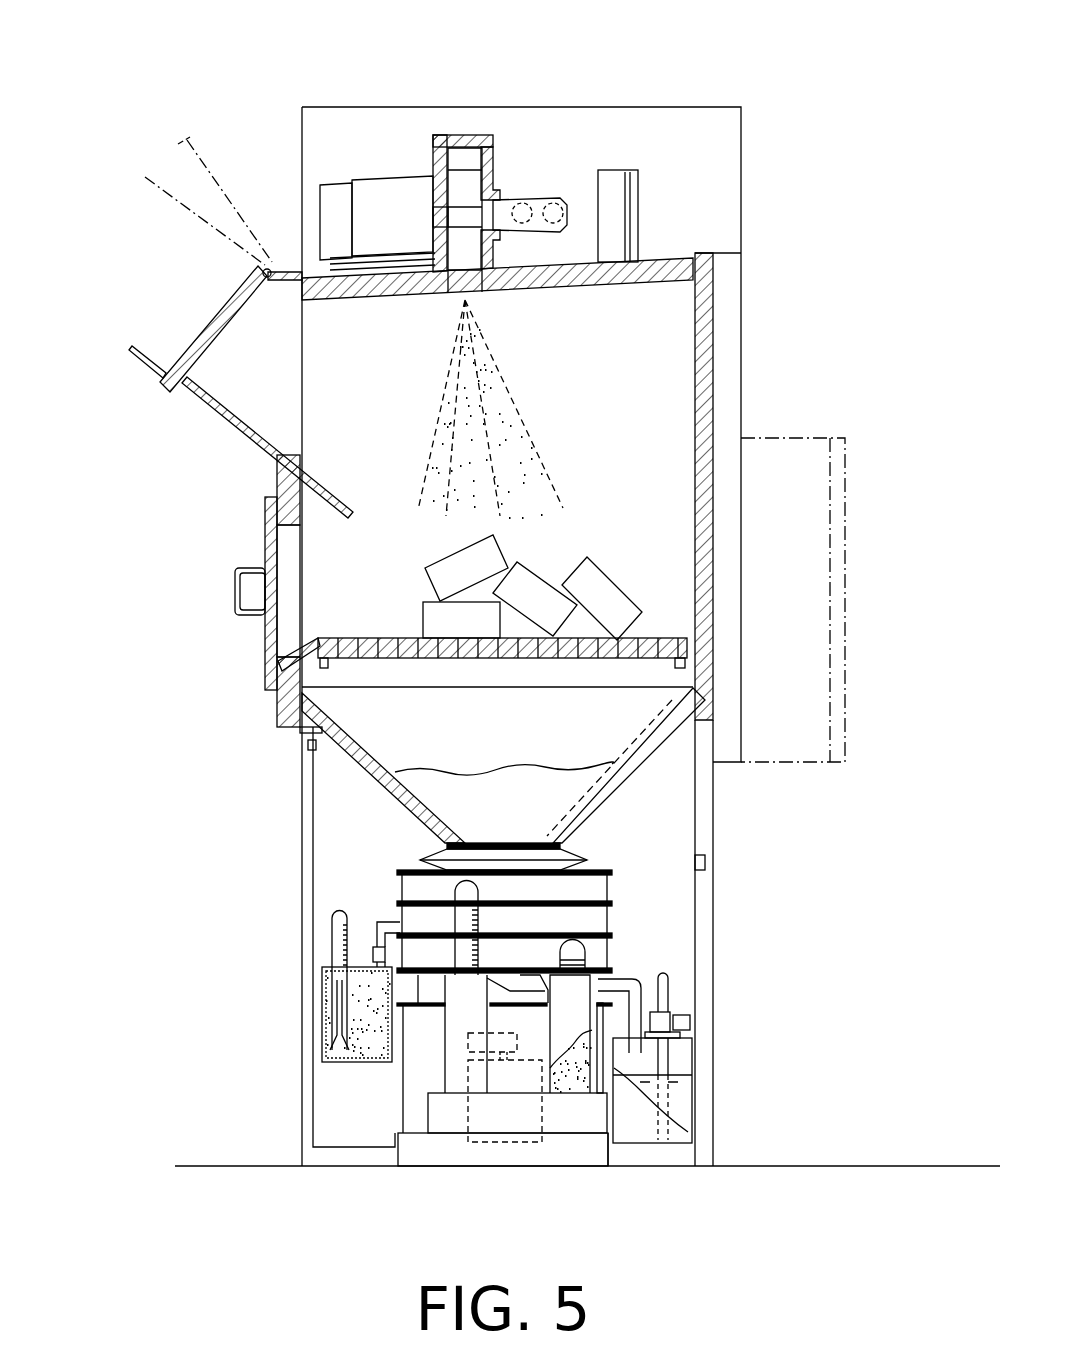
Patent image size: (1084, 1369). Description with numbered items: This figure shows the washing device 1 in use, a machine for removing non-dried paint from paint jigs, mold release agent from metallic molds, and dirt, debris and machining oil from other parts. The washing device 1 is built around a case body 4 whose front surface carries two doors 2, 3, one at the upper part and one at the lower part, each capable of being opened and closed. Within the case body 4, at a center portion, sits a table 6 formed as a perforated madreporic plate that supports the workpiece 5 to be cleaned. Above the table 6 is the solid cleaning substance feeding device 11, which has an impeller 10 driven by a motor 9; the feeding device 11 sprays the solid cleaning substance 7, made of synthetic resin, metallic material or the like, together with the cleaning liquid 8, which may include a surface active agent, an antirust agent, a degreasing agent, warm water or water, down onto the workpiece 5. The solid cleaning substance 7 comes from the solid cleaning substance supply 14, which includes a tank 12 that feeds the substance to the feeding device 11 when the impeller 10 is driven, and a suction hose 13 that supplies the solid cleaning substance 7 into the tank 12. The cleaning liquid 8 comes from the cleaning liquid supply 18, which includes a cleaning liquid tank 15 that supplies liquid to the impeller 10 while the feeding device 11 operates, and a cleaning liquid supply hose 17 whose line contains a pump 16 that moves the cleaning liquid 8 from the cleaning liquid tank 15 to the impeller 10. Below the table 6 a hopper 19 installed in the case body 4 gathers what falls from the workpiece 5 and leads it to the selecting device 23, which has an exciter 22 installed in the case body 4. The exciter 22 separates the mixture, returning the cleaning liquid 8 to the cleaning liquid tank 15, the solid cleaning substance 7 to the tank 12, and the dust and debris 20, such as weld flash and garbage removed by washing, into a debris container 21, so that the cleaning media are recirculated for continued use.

The washing device 1 is at (836, 66).
The door 2 is at (205, 210).
The door 3 is at (265, 549).
The case body 4 is at (718, 385).
The workpiece 5 is at (428, 585).
The table 6 is at (549, 665).
The solid cleaning substance 7 is at (440, 448).
The cleaning liquid 8 is at (540, 405).
The motor 9 is at (372, 197).
The impeller 10 is at (465, 155).
The solid cleaning substance feeding device 11 is at (493, 150).
The tank 12 is at (325, 1065).
The suction hose 13 is at (335, 1008).
The solid cleaning substance supply 14 is at (326, 950).
The cleaning liquid tank 15 is at (632, 1125).
The pump 16 is at (672, 1018).
The cleaning liquid supply hose 17 is at (672, 975).
The cleaning liquid supply 18 is at (695, 1022).
The hopper 19 is at (593, 815).
The dust and debris 20 is at (577, 1088).
The debris container 21 is at (548, 1060).
The exciter 22 is at (466, 1112).
The selecting device 23 is at (393, 862).